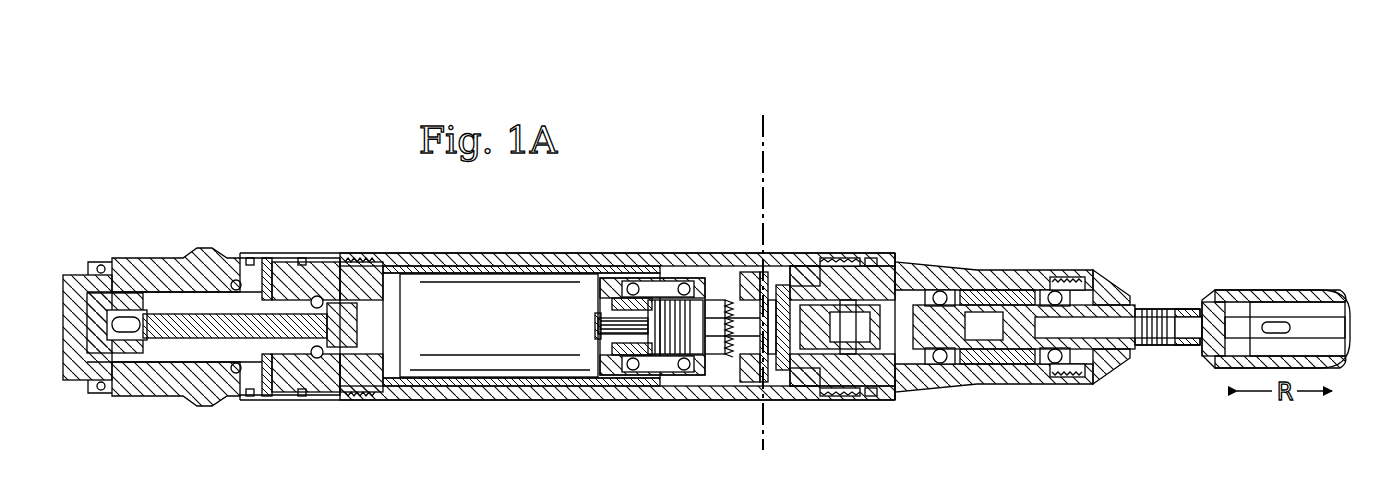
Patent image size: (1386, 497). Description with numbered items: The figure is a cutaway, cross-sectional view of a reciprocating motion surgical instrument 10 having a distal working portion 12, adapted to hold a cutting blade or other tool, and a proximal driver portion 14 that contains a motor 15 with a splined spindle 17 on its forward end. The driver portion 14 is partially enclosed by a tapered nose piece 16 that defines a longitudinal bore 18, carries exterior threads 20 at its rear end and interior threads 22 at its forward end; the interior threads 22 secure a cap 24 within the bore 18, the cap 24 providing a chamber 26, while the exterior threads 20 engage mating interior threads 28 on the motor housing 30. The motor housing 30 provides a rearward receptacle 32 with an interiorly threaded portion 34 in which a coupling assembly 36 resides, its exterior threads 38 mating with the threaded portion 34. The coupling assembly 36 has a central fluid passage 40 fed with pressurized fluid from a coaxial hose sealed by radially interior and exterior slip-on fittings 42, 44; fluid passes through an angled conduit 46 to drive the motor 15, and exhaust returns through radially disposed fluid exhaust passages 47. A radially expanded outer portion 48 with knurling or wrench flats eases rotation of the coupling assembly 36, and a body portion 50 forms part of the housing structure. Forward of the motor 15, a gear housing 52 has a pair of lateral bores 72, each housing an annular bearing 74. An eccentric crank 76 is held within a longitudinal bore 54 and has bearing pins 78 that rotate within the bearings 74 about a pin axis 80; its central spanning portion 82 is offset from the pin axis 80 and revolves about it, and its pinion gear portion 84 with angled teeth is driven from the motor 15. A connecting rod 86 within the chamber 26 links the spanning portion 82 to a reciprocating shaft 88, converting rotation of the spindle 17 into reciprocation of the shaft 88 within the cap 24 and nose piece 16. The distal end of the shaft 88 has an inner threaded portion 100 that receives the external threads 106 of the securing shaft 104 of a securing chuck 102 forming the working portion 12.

The reciprocating motion surgical instrument 10 is at (913, 105).
The distal working portion 12 is at (1237, 242).
The proximal driver portion 14 is at (608, 207).
The motor 15 is at (485, 337).
The tapered nose piece 16 is at (922, 258).
The splined spindle 17 is at (597, 317).
The longitudinal bore 18 is at (993, 288).
The exterior threads 20 is at (833, 265).
The interior threads 22 is at (1068, 278).
The cap 24 is at (1098, 280).
The chamber 26 is at (1027, 280).
The interior threads 28 is at (880, 268).
The motor housing 30 is at (455, 253).
The rearward receptacle 32 is at (333, 258).
The interiorly threaded portion 34 is at (395, 288).
The coupling assembly 36 is at (268, 270).
The exterior threads 38 is at (360, 262).
The central fluid passage 40 is at (317, 296).
The radially interior slip-on fitting 42 is at (128, 345).
The radially exterior slip-on fitting 44 is at (75, 275).
The angled conduit 46 is at (355, 365).
The fluid exhaust passages 47 is at (236, 280).
The radially expanded outer portion 48 is at (195, 250).
The battery housing 50 is at (555, 253).
The gear housing 52 is at (648, 270).
The longitudinal bore 54 is at (708, 382).
The lateral bores 72 is at (750, 272).
The annular bearings 74 is at (786, 285).
The eccentric crank 76 is at (810, 268).
The bearing pins 78 is at (766, 272).
The pin axis 80 is at (762, 135).
The central spanning portion 82 is at (772, 356).
The pinion gear portion 84 is at (722, 300).
The connecting rod 86 is at (850, 349).
The reciprocating shaft 88 is at (970, 337).
The inner threaded portion 100 is at (1183, 309).
The securing chuck 102 is at (1287, 282).
The securing shaft 104 is at (1183, 338).
The external threads 106 is at (1145, 310).